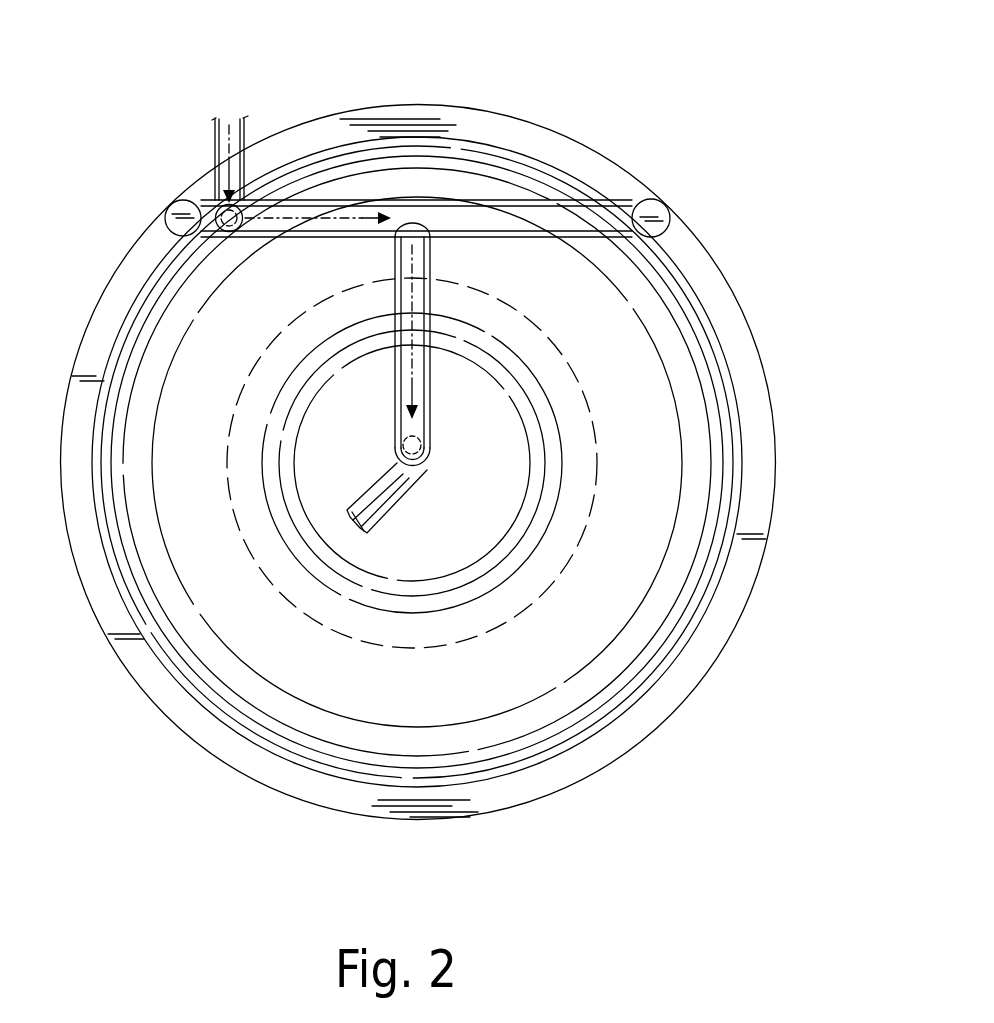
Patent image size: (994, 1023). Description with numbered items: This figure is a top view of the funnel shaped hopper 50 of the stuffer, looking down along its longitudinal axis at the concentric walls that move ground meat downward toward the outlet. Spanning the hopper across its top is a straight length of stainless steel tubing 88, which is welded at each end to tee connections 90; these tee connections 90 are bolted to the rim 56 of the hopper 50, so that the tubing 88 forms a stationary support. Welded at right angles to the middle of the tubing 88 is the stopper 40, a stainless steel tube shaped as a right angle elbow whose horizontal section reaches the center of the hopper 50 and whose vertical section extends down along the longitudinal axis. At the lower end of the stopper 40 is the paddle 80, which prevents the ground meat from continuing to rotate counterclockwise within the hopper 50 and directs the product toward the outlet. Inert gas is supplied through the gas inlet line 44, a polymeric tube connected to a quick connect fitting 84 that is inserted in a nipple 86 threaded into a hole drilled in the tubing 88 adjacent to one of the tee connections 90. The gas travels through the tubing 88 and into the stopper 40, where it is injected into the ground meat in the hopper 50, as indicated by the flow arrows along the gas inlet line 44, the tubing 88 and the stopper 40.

The stopper 40 is at (376, 373).
The gas inlet line 44 is at (215, 138).
The hopper 50 is at (776, 474).
The rim 56 is at (712, 288).
The paddle 80 is at (414, 511).
The quick connect fitting 84 is at (250, 237).
The nipple 86 is at (183, 268).
The tubing 88 is at (477, 200).
The tee connections 90 is at (657, 200).